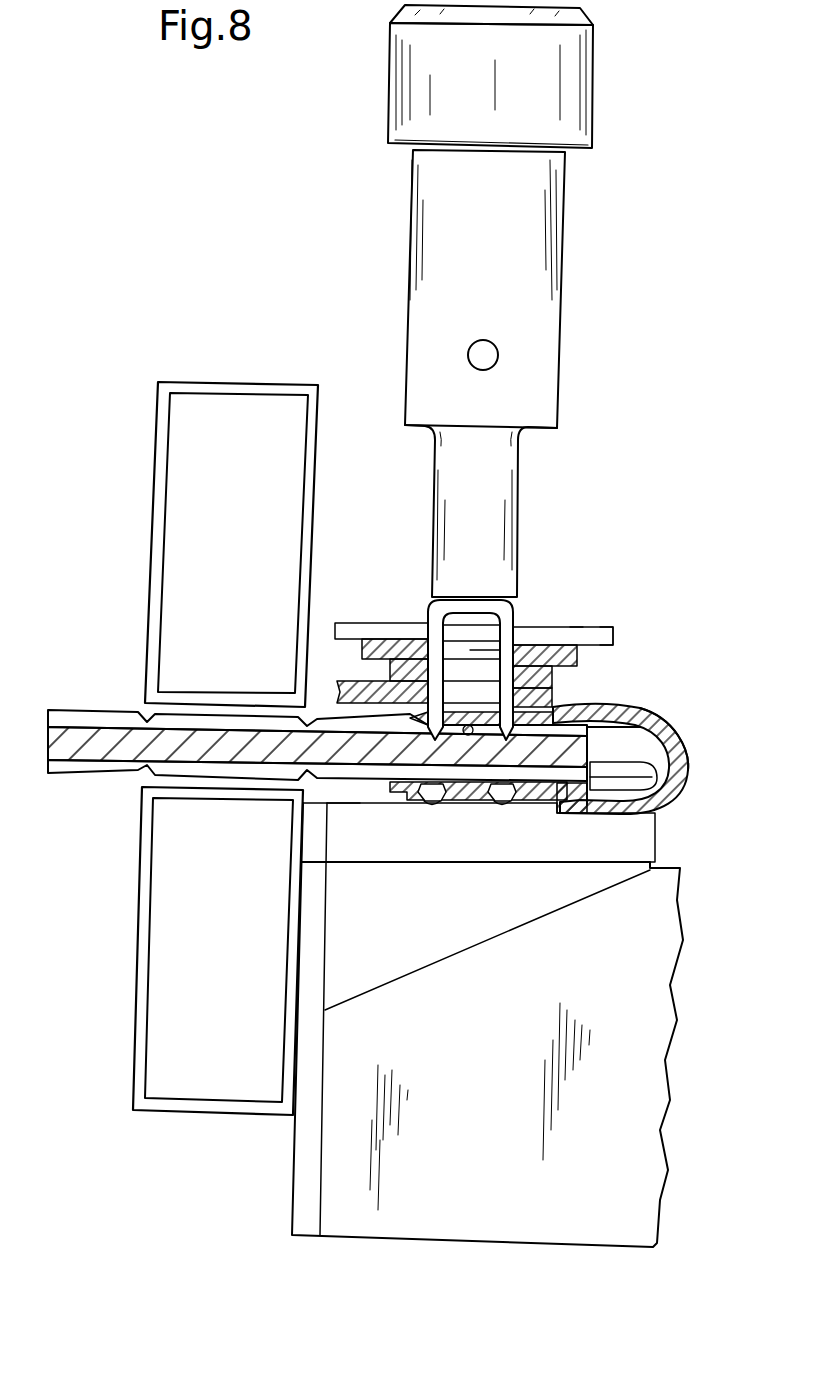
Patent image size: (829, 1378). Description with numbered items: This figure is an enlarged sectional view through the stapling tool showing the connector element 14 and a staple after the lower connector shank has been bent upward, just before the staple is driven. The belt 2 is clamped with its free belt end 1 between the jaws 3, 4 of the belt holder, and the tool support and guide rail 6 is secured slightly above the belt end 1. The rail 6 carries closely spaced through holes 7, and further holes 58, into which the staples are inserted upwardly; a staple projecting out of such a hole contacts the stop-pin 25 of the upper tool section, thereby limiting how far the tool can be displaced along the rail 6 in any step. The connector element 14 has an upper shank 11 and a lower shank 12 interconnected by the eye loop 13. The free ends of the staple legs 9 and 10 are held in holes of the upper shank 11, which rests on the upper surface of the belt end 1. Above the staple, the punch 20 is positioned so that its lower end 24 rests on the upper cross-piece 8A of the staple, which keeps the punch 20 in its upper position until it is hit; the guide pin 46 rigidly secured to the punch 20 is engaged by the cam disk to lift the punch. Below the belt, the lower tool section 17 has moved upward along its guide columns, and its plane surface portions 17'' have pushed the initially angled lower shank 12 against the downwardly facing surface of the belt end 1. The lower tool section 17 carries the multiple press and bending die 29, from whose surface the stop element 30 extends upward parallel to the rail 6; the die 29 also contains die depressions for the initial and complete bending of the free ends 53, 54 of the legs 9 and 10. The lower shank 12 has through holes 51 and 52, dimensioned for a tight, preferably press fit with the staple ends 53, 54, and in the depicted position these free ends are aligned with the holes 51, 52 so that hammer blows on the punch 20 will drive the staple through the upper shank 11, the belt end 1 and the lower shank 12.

The punch 20 is at (580, 95).
The guide pin 46 is at (490, 352).
The lower end of the punch 24 is at (505, 587).
The upper cross-piece of the staple 8A is at (440, 600).
The stop-pin 25 is at (567, 637).
The staple leg 10 is at (492, 625).
The staple leg 9 is at (435, 630).
The through hole 7 is at (477, 655).
The tool support and guide rail 6 is at (592, 638).
The free end of staple leg 53 is at (405, 671).
The free end of staple leg 54 is at (540, 700).
The hole in the rail 58 is at (566, 680).
The upper shank 11 is at (600, 710).
The free belt end 1 is at (587, 753).
The eye loop 13 is at (673, 760).
The stop element 30 is at (603, 787).
The connector element 14 is at (662, 803).
The multiple press and bending die 29 is at (637, 848).
The lower tool section 17 is at (513, 1025).
The lower shank 12 is at (527, 807).
The through hole 51 is at (427, 805).
The through hole 52 is at (498, 805).
The plane surface portion 17'' is at (292, 823).
The belt 2 is at (87, 720).
The jaw 3 is at (147, 953).
The jaw 4 is at (162, 570).